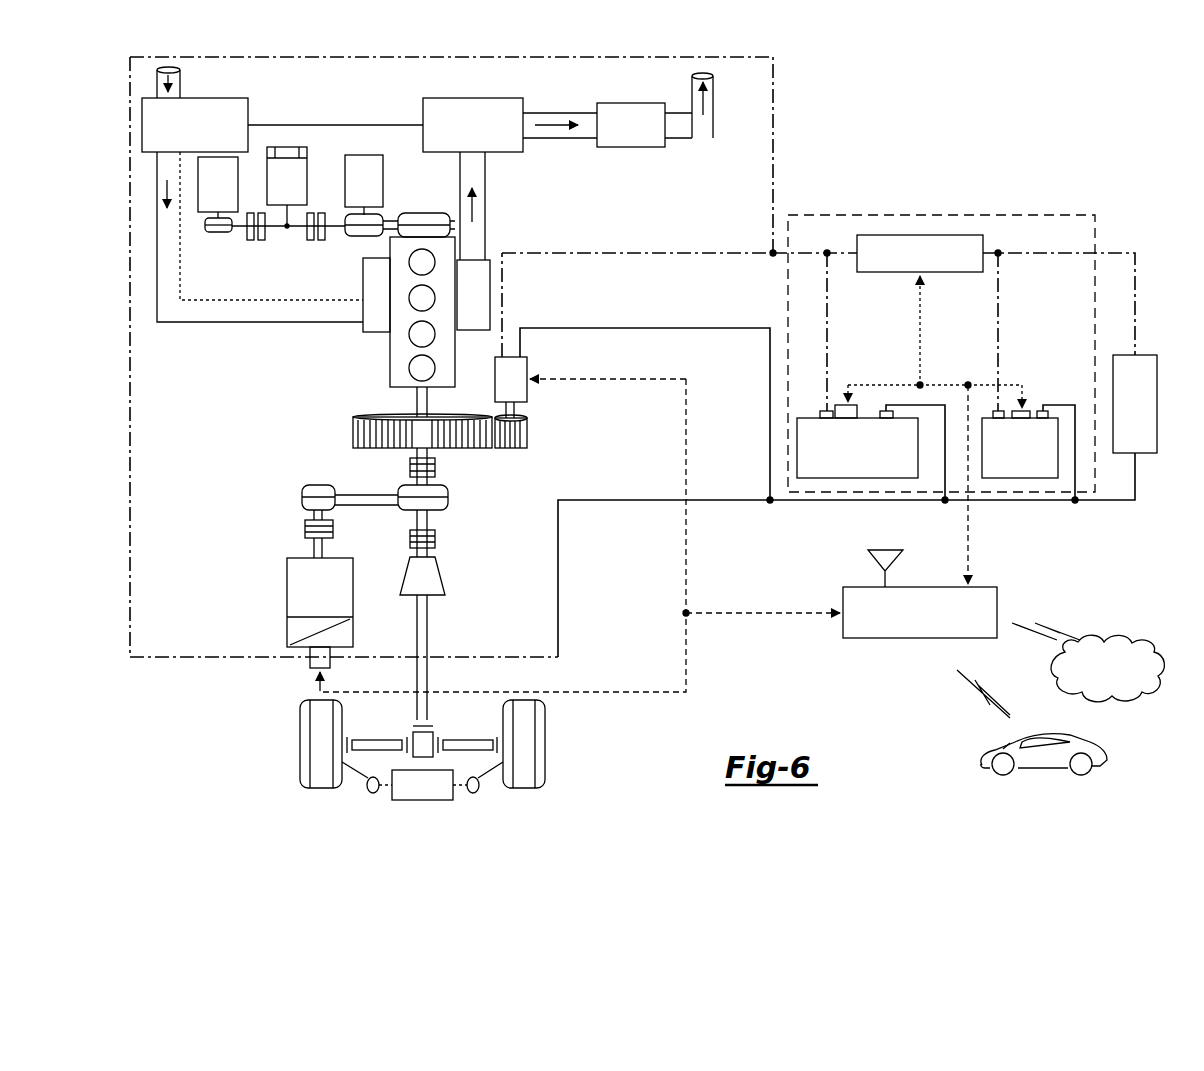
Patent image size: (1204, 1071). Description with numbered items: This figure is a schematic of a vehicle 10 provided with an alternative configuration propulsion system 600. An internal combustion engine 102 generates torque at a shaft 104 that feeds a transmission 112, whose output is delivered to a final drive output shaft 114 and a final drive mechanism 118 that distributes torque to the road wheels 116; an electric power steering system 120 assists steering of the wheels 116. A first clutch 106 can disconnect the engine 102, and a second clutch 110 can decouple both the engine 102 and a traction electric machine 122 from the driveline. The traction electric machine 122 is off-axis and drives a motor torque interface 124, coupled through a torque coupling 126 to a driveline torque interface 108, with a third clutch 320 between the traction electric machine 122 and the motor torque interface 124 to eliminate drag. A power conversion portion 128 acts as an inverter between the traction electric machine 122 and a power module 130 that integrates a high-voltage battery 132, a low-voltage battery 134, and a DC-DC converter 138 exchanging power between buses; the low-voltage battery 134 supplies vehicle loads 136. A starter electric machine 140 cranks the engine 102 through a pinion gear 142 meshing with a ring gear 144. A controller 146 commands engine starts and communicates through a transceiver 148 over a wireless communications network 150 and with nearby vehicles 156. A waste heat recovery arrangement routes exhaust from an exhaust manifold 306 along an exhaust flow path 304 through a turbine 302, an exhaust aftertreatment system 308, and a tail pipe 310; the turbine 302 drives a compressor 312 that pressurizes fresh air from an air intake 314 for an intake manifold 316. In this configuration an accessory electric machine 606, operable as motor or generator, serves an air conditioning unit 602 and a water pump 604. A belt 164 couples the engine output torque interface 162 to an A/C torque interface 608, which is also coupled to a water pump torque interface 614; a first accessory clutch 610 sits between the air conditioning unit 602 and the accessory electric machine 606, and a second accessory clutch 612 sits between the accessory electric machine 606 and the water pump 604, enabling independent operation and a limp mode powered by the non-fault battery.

The vehicle 10 is at (913, 143).
The internal combustion engine 102 is at (395, 370).
The shaft 104 is at (417, 405).
The first clutch 106 is at (410, 472).
The driveline torque interface 108 is at (448, 497).
The second clutch 110 is at (435, 538).
The transmission 112 is at (442, 573).
The final drive output shaft 114 is at (427, 670).
The road wheels 116 is at (300, 745).
The final drive mechanism 118 is at (420, 735).
The electric power steering system 120 is at (403, 800).
The traction electric machine 122 is at (320, 602).
The motor torque interface 124 is at (302, 493).
The torque coupling 126 is at (360, 508).
The power conversion portion 128 is at (287, 632).
The power module 130 is at (1025, 215).
The high-voltage battery 132 is at (871, 452).
The low-voltage battery 134 is at (1028, 452).
The vehicle loads 136 is at (1135, 404).
The DC-DC converter 138 is at (954, 323).
The starter electric machine 140 is at (512, 370).
The pinion gear 142 is at (527, 430).
The ring gear 144 is at (463, 448).
The controller 146 is at (920, 612).
The transceiver 148 is at (868, 562).
The wireless communications network 150 is at (1145, 648).
The vehicles 156 is at (1107, 758).
The engine output torque interface 162 is at (428, 212).
The belt 164 is at (401, 220).
The turbine 302 is at (473, 125).
The exhaust flow path 304 is at (485, 205).
The exhaust manifold 306 is at (473, 295).
The exhaust aftertreatment system 308 is at (631, 125).
The tail pipe 310 is at (690, 83).
The compressor 312 is at (195, 125).
The air intake 314 is at (180, 82).
The intake manifold 316 is at (370, 330).
The third clutch 320 is at (305, 530).
The propulsion system 600 is at (225, 375).
The air conditioning unit 602 is at (364, 181).
The water pump 604 is at (218, 184).
The accessory electric machine 606 is at (287, 186).
The A/C torque interface 608 is at (355, 238).
The first accessory clutch 610 is at (312, 241).
The second accessory clutch 612 is at (250, 241).
The water pump torque interface 614 is at (215, 234).